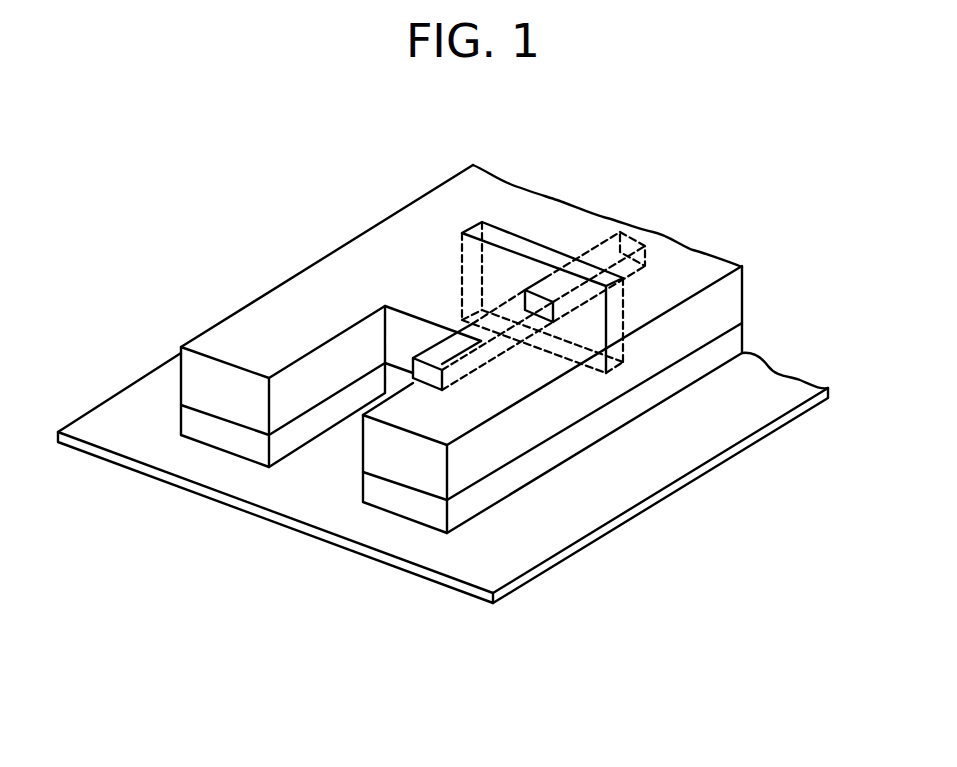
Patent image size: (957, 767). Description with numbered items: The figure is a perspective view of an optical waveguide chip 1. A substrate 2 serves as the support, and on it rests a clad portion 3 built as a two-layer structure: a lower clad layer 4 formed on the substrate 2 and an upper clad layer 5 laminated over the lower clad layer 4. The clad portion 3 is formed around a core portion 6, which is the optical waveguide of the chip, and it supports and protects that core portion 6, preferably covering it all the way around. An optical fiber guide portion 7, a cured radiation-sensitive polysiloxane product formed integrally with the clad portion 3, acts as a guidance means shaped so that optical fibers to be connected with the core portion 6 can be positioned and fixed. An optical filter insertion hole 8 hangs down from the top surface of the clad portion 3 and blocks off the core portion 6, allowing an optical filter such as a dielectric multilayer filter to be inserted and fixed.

The optical waveguide chip 1 is at (445, 390).
The substrate 2 is at (720, 467).
The clad portion 3 is at (506, 396).
The lower clad layer 4 is at (728, 348).
The upper clad layer 5 is at (728, 305).
The core portion 6 is at (633, 225).
The optical fiber guide portion 7 is at (400, 468).
The optical filter insertion hole 8 is at (513, 243).